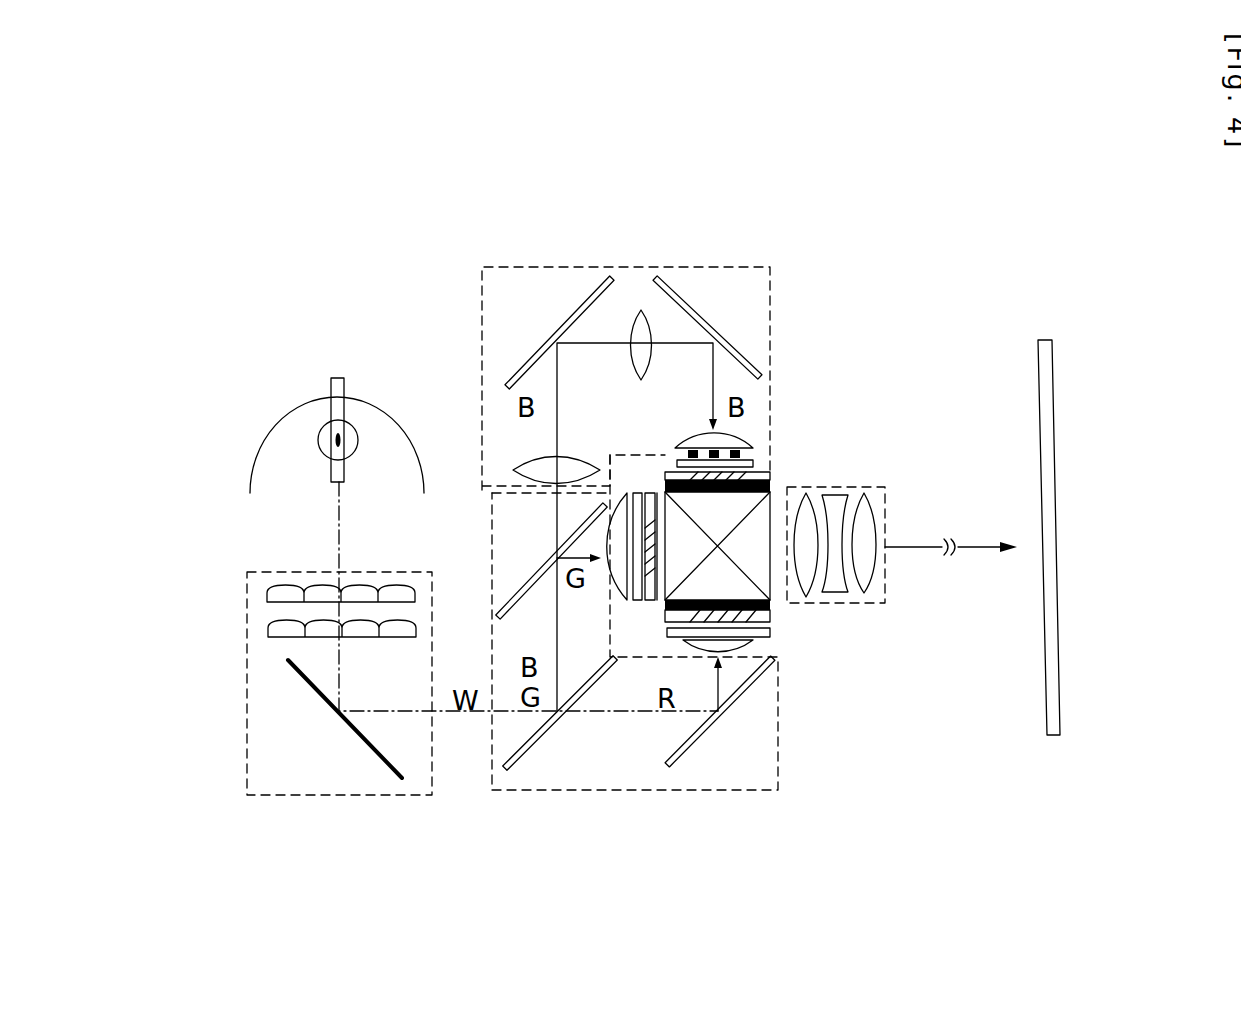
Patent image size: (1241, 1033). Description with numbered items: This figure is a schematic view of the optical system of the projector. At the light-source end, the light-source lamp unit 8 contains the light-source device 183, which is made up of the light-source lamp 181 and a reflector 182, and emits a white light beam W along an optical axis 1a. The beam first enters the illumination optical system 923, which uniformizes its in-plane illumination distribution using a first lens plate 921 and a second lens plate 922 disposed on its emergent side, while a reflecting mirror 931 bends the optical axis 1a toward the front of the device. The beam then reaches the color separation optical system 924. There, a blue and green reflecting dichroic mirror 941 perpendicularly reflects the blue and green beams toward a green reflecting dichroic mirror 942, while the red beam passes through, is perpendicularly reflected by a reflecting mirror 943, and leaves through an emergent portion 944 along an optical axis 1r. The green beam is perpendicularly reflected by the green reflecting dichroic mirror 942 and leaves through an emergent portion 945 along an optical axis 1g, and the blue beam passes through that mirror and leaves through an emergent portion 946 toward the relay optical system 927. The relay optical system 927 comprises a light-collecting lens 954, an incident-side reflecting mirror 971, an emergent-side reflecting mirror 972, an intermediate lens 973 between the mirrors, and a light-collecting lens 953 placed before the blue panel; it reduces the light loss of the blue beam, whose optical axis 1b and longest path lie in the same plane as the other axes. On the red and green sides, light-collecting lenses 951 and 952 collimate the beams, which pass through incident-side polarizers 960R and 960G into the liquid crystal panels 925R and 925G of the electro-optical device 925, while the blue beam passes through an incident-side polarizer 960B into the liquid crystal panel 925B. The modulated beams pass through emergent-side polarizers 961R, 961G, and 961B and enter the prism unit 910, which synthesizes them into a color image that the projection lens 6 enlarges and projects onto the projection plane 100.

The light-source lamp unit 8 is at (295, 418).
The light-source lamp 181 is at (326, 427).
The reflector 182 is at (343, 424).
The light-source device 183 is at (380, 303).
The optical axis 1a is at (339, 565).
The first lens plate 921 is at (267, 598).
The second lens plate 922 is at (268, 633).
The illumination optical system 923 is at (247, 727).
The reflecting mirror 931 is at (365, 747).
The relay optical system 927 is at (503, 265).
The incident-side reflecting mirror 971 is at (525, 357).
The emergent-side reflecting mirror 972 is at (705, 315).
The intermediate lens 973 is at (640, 323).
The optical axis 1b is at (613, 340).
The light-collecting lens 954 is at (523, 460).
The emergent portion 946 is at (513, 490).
The color separation optical system 924 is at (780, 772).
The green reflecting dichroic mirror 942 is at (528, 578).
The optical axis 1g is at (570, 550).
The emergent portion 945 is at (603, 580).
The blue and green reflecting dichroic mirror 941 is at (520, 768).
The reflecting mirror 943 is at (680, 767).
The emergent portion 944 is at (773, 665).
The incident-side polarizer 960G is at (603, 533).
The light-collecting lens 952 is at (617, 462).
The liquid crystal panel 925G is at (650, 497).
The emergent-side polarizer 961G is at (650, 650).
The electro-optical device 925 is at (667, 592).
The optical axis 1r is at (655, 638).
The prism unit 910 is at (740, 500).
The light-collecting lens 953 is at (745, 435).
The incident-side polarizer 960B is at (755, 462).
The liquid crystal panel 925B is at (768, 474).
The emergent-side polarizer 961B is at (770, 486).
The emergent-side polarizer 961R is at (773, 604).
The liquid crystal panel 925R is at (773, 617).
The incident-side polarizer 960R is at (773, 633).
The light-collecting lens 951 is at (760, 650).
The projection lens 6 is at (887, 500).
The projection plane 100 is at (1052, 382).